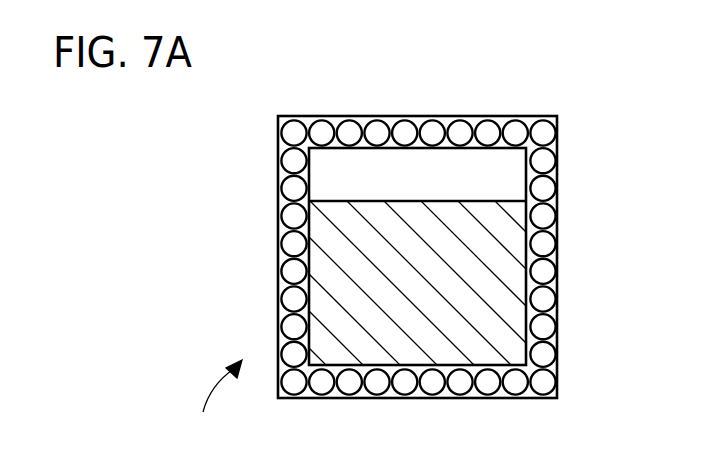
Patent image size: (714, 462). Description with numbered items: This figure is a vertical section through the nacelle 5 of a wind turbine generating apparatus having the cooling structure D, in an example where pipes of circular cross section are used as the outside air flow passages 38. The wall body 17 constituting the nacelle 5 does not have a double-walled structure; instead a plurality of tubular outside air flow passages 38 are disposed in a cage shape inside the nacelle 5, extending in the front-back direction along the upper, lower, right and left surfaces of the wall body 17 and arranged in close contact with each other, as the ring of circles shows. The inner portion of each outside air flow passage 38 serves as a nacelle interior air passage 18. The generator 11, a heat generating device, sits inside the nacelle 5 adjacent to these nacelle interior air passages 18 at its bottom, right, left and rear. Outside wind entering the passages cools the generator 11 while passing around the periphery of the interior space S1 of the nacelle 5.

The nacelle 5 is at (428, 249).
The wall body 17 is at (415, 117).
The outside air flow passages 38 is at (480, 119).
The nacelle interior air passage 18 is at (544, 133).
The generator 11 is at (432, 348).
The interior space S1 is at (417, 182).
The cooling structure D is at (213, 392).